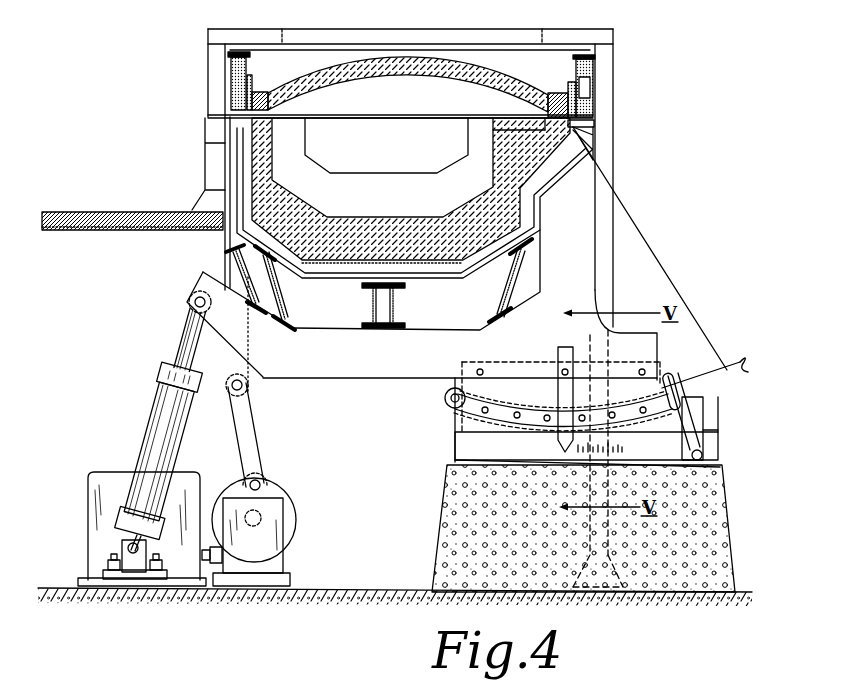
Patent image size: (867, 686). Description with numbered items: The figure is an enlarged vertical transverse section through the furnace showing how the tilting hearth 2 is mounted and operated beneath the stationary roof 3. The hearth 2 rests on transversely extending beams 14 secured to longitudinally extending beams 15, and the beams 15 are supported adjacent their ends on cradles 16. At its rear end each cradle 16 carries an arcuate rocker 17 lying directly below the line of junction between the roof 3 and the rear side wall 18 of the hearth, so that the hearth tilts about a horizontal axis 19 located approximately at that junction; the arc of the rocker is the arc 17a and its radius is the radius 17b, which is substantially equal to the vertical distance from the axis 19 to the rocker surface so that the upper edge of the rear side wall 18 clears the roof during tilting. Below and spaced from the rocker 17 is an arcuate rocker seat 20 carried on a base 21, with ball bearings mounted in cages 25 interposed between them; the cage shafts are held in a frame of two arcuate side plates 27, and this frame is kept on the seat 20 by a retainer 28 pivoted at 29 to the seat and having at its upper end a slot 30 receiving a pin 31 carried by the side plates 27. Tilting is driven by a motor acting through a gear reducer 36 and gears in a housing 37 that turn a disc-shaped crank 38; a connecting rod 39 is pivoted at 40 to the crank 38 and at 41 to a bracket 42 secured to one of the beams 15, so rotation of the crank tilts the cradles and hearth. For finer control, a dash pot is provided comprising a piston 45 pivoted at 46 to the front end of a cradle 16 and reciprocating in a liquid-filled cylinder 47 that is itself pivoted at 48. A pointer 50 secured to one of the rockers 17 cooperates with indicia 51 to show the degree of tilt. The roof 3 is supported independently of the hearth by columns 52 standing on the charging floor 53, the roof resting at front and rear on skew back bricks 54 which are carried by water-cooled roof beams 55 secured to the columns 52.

The tilting hearth 2 is at (402, 220).
The stationary roof 3 is at (413, 68).
The transversely extending beams 14 is at (560, 170).
The longitudinally extending beams 15 is at (262, 287).
The cradles 16 is at (375, 378).
The arcuate rocker 17 is at (663, 378).
The arc of rocker 17a is at (721, 373).
The radius of arc 17b is at (667, 264).
The rear side wall 18 is at (594, 139).
The horizontal axis 19 is at (597, 123).
The arcuate rocker seat 20 is at (715, 432).
The base 21 is at (720, 513).
The cages 25 is at (445, 398).
The arcuate side plates 27 is at (467, 404).
The retainer 28 is at (705, 418).
The pivot 29 is at (703, 457).
The slot 30 is at (674, 383).
The pin 31 is at (684, 400).
The gear reducer 36 is at (97, 498).
The housing 37 is at (280, 558).
The crank 38 is at (297, 521).
The connecting rod 39 is at (253, 458).
The pivot 40 is at (261, 486).
The pivot 41 is at (247, 388).
The bracket 42 is at (230, 360).
The piston 45 is at (185, 338).
The pivot 46 is at (193, 299).
The cylinder 47 is at (165, 403).
The pivot 48 is at (128, 549).
The pointer 50 is at (558, 440).
The indicia 51 is at (623, 444).
The columns 52 is at (213, 163).
The charging floor 53 is at (73, 230).
The skew back bricks 54 is at (268, 115).
The roof beams 55 is at (248, 66).